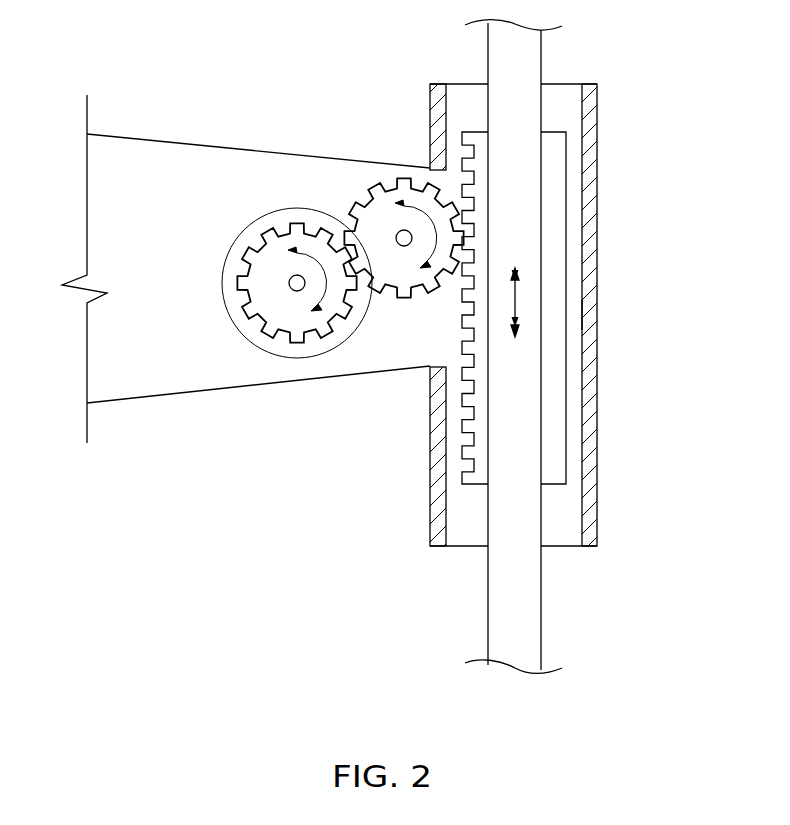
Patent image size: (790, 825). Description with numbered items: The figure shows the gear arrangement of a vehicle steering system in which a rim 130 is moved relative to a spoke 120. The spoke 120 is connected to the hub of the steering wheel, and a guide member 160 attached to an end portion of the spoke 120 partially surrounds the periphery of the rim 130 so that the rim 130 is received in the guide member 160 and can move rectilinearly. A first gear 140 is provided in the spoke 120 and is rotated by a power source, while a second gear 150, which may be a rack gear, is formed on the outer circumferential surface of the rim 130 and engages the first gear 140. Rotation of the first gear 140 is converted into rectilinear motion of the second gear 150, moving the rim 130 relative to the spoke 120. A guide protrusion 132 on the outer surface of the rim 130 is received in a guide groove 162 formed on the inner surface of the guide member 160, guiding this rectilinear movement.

The spoke 120 is at (178, 385).
The rim 130 is at (528, 594).
The guide protrusion 132 is at (558, 183).
The first gear 140 is at (375, 213).
The second gear 150 is at (479, 150).
The guide member 160 is at (568, 511).
The guide groove 162 is at (572, 327).